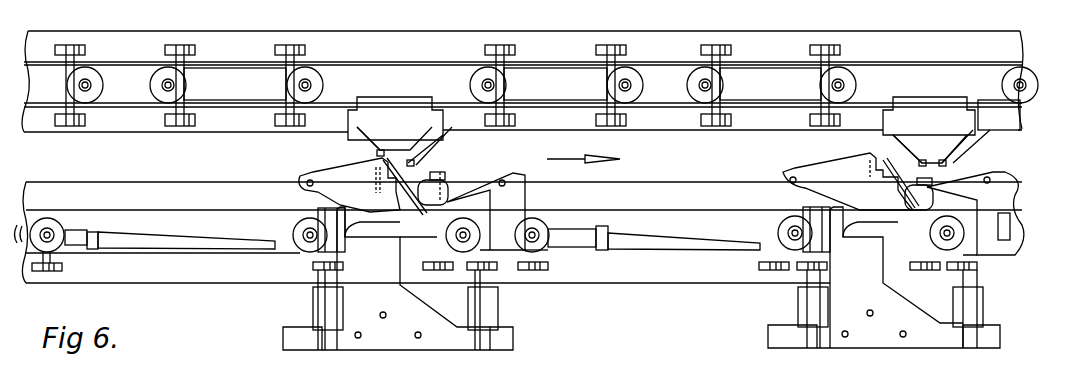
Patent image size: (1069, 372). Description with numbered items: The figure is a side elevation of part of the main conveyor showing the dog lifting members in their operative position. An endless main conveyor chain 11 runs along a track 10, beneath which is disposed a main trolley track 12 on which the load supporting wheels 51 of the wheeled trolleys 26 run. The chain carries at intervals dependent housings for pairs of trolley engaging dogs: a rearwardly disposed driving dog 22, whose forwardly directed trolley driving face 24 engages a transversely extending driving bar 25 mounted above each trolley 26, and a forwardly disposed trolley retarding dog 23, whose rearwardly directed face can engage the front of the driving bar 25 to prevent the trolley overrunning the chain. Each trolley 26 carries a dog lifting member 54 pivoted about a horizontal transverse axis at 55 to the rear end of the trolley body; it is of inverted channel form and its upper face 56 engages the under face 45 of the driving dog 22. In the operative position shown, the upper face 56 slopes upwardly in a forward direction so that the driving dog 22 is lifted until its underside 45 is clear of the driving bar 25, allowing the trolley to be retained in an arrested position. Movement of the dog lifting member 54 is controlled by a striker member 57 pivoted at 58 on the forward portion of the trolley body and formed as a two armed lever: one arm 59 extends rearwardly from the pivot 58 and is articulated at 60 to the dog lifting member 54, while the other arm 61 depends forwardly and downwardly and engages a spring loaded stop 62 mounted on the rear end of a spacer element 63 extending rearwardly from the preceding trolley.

The track 10 is at (233, 43).
The main conveyor chain 11 is at (403, 78).
The main trolley track 12 is at (207, 193).
The driving dog 22 is at (362, 150).
The trolley retarding dog 23 is at (436, 152).
The trolley driving face 24 is at (386, 148).
The driving bar 25 is at (415, 165).
The trolley 26 is at (282, 330).
The under face 45 is at (648, 186).
The load supporting wheels 51 is at (295, 233).
The dog lifting member 54 is at (606, 182).
The pivot 55 is at (307, 180).
The upper face 56 is at (372, 163).
The striker member 57 is at (510, 197).
The pivot 58 is at (506, 181).
The arm 59 is at (417, 213).
The articulation 60 is at (448, 193).
The arm 61 is at (482, 248).
The spring loaded stop 62 is at (545, 212).
The spacer element 63 is at (648, 245).